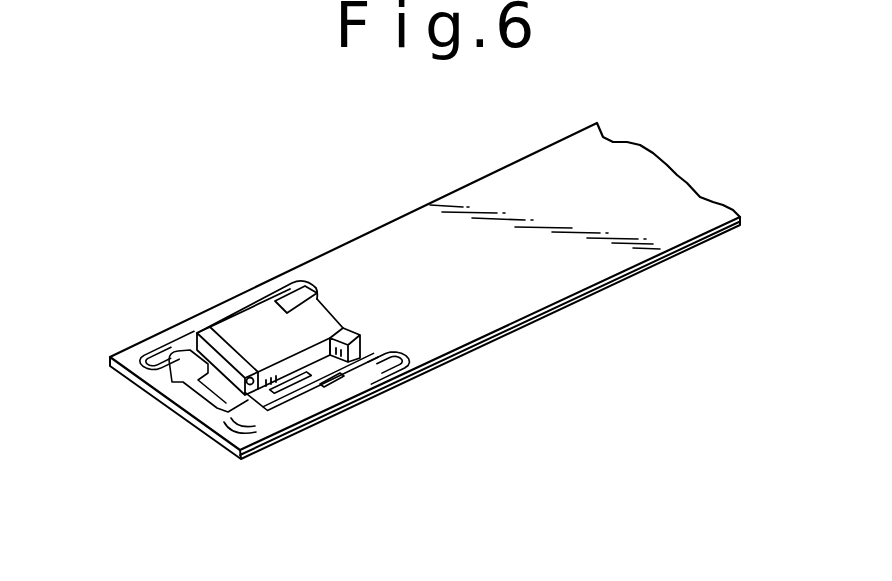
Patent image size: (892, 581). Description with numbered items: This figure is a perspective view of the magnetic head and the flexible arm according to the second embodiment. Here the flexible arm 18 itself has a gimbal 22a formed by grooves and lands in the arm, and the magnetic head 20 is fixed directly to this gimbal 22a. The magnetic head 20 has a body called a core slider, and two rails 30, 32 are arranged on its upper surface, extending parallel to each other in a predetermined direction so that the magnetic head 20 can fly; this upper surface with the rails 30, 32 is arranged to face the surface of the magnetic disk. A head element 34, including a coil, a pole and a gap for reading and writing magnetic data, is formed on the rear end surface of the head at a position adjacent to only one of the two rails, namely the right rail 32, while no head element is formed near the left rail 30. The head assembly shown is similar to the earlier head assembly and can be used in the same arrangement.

The flexible arm 18 is at (408, 214).
The magnetic head 20 is at (278, 328).
The gimbal 22a is at (203, 377).
The rail 30 is at (225, 335).
The rail 32 is at (341, 350).
The head element 34 is at (252, 392).